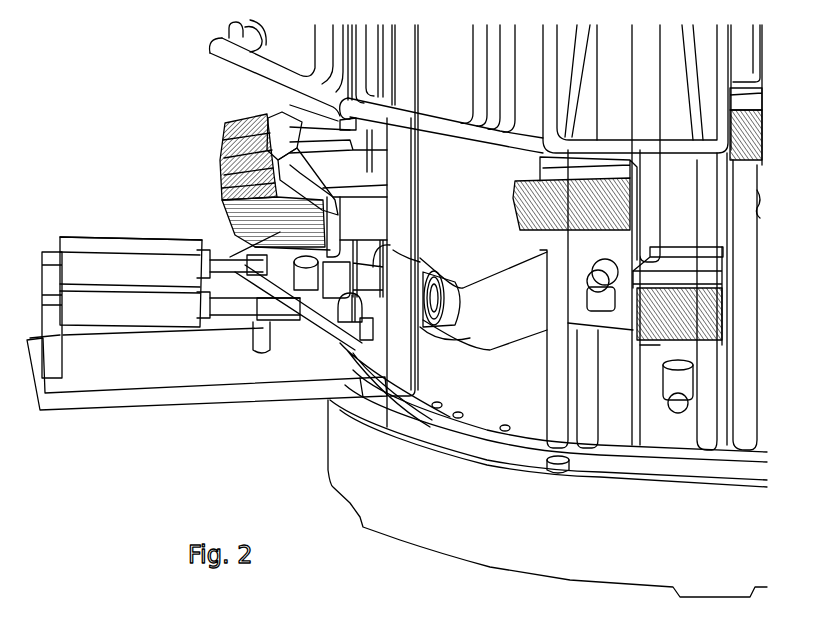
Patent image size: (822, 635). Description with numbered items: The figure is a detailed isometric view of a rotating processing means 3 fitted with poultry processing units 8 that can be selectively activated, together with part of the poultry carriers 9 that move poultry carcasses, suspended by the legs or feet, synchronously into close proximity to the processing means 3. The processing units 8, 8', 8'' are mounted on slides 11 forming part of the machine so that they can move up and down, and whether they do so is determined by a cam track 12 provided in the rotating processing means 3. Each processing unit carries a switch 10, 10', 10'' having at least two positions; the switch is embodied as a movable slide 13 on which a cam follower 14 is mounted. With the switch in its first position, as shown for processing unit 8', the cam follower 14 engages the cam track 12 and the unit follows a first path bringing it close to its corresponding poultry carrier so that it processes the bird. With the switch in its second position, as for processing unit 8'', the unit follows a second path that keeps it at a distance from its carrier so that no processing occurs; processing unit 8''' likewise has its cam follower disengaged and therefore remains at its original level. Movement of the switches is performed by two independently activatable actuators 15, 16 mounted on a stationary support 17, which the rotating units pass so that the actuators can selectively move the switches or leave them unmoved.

The rotating processing means 3 is at (492, 214).
The processing unit 8 is at (471, 214).
The processing unit 8' is at (379, 212).
The processing unit 8'' is at (339, 146).
The processing unit 8''' is at (586, 274).
The poultry carrier 9 is at (200, 48).
The switch 10 is at (651, 392).
The switch 10' is at (359, 380).
The switch 10'' is at (382, 267).
The slide 11 is at (378, 63).
The cam track 12 is at (533, 317).
The movable slide 13 is at (425, 310).
The cam follower 14 is at (458, 306).
The actuator 15 is at (118, 314).
The actuator 16 is at (142, 238).
The stationary support 17 is at (89, 408).